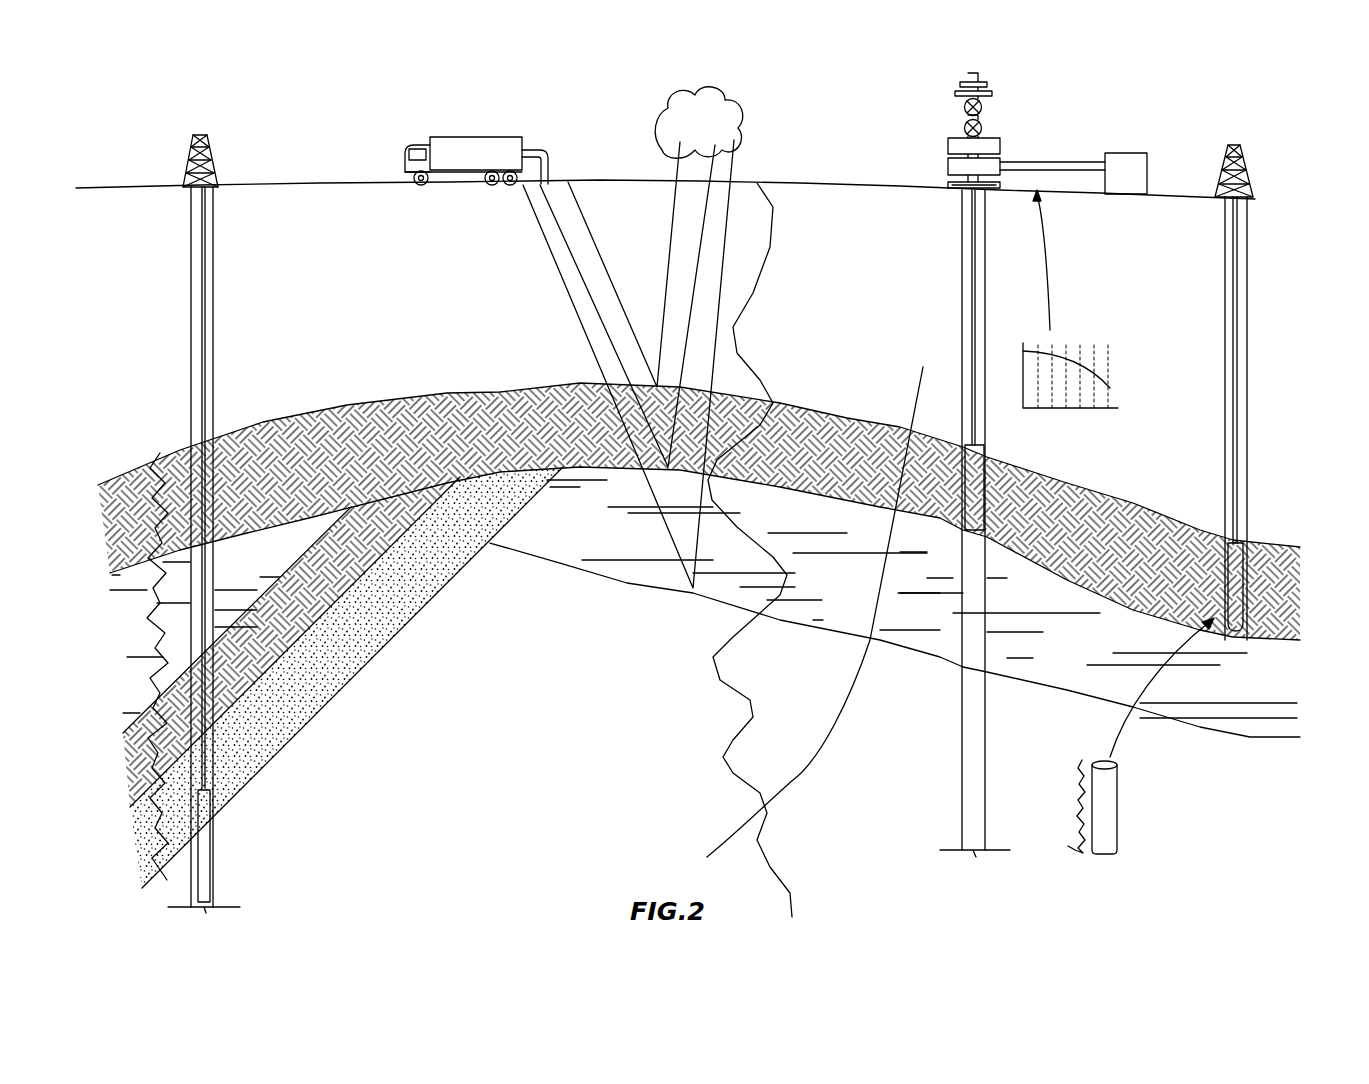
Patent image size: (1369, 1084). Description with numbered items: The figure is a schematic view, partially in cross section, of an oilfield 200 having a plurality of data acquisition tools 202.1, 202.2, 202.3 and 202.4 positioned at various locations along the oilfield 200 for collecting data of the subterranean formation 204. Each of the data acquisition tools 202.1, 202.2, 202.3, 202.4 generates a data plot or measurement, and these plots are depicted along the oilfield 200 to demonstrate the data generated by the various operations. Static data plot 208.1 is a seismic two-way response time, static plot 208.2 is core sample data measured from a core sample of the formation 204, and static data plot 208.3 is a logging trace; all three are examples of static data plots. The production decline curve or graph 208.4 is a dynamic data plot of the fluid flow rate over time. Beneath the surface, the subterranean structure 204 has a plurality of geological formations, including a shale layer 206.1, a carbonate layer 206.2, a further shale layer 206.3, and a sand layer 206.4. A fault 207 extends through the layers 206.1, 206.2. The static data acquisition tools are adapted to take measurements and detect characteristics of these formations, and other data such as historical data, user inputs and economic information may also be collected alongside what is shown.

The oilfield 200 is at (1170, 139).
The data acquisition tool 202.1 is at (436, 134).
The data acquisition tool 202.2 is at (1250, 576).
The data acquisition tool 202.3 is at (213, 850).
The data acquisition tool 202.4 is at (985, 525).
The subterranean formation 204 is at (555, 679).
The shale layer 206.1 is at (360, 461).
The carbonate layer 206.2 is at (275, 571).
The shale layer 206.3 is at (350, 589).
The sand layer 206.4 is at (392, 644).
The fault 207 is at (919, 368).
The static data plot 208.1 is at (748, 718).
The static data plot 208.2 is at (1081, 775).
The static data plot 208.3 is at (152, 632).
The production decline curve 208.4 is at (1070, 413).